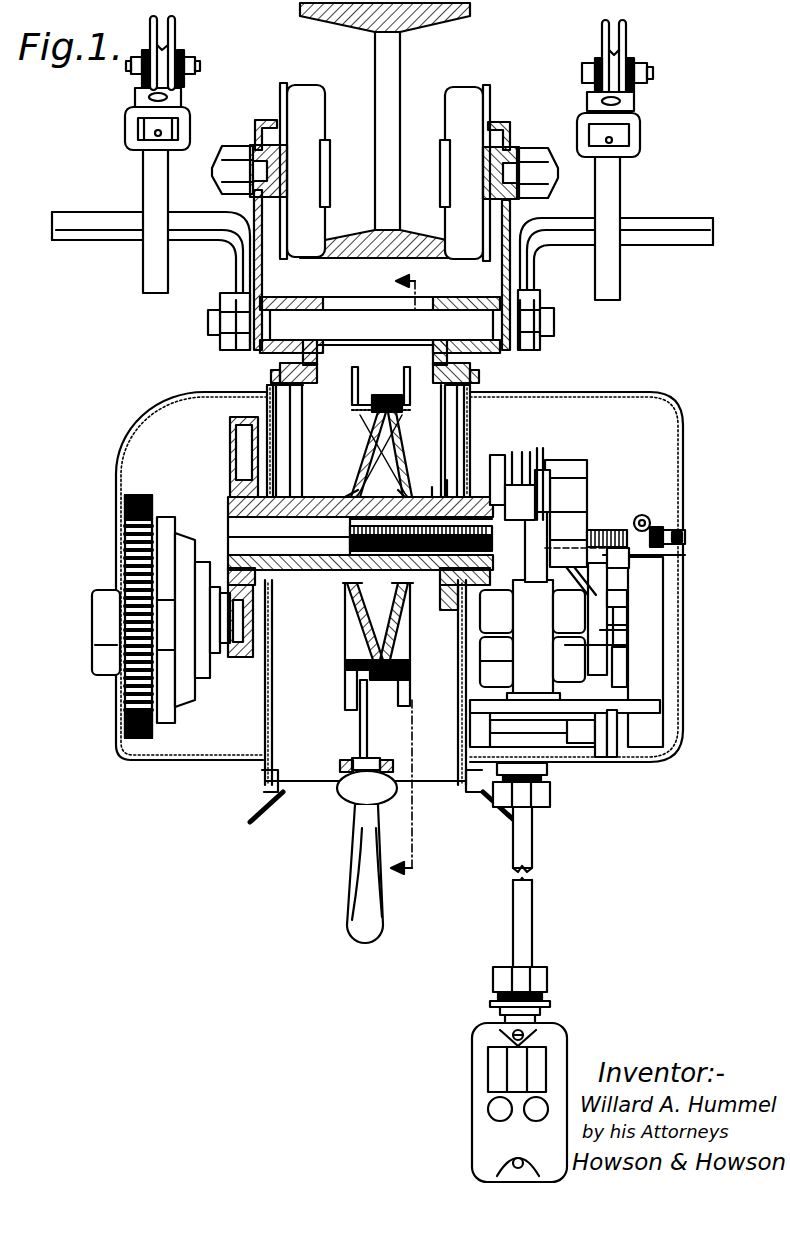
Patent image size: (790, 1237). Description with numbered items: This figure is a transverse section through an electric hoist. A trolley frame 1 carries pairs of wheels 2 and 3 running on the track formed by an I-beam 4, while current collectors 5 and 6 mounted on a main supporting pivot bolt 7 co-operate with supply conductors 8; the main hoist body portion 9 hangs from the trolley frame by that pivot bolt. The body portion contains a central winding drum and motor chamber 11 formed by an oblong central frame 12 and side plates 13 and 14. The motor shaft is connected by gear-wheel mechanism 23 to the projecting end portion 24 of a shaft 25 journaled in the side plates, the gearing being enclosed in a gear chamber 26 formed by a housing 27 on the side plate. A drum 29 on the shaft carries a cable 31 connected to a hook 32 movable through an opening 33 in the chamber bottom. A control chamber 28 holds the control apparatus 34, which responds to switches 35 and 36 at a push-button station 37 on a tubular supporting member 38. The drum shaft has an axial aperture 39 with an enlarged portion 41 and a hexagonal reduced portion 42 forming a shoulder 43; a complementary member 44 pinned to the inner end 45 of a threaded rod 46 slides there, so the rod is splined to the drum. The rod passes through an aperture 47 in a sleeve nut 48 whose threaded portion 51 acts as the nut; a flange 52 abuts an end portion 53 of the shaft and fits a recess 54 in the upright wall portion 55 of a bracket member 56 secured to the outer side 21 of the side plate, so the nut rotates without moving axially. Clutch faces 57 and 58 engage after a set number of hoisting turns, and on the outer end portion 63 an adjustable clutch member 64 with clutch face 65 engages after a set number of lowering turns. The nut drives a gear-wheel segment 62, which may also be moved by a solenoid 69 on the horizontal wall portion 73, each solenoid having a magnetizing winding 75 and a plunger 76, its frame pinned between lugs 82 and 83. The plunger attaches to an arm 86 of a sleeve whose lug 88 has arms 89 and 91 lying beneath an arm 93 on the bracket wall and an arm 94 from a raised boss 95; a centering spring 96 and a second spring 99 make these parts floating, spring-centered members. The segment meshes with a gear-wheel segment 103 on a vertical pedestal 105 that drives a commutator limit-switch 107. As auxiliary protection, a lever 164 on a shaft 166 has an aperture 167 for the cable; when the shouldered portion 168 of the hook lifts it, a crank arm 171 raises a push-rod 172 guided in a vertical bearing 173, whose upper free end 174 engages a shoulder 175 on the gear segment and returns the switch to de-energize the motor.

The trolley frame 1 is at (378, 291).
The wheels 2 is at (312, 128).
The wheels 3 is at (452, 128).
The I-beam 4 is at (396, 72).
The current collector 5 is at (163, 49).
The current collector 6 is at (623, 61).
The main supporting pivot bolt 7 is at (325, 334).
The supply conductors 8 is at (173, 34).
The main hoist body portion 9 is at (373, 418).
The central winding drum and motor chamber 11 is at (373, 376).
The central frame 12 is at (292, 434).
The side plate 13 is at (276, 451).
The side plate 14 is at (466, 408).
The outer side 21 is at (466, 425).
The gear-wheel mechanism 23 is at (230, 501).
The projecting end portion 24 is at (228, 516).
The shaft 25 is at (323, 582).
The gear chamber 26 is at (143, 563).
The housing 27 is at (116, 471).
The control chamber 28 is at (567, 469).
The drum 29 is at (400, 423).
The cable 31 is at (368, 728).
The hook 32 is at (365, 913).
The opening 33 is at (337, 782).
The control apparatus 34 is at (580, 510).
The switch 35 is at (488, 1113).
The switch 36 is at (526, 1117).
The push-button station 37 is at (478, 1063).
The tubular supporting member 38 is at (516, 936).
The axial aperture 39 is at (333, 497).
The enlarged portion 41 is at (430, 481).
The reduced portion 42 is at (289, 539).
The shoulder 43 is at (362, 488).
The complementary member 44 is at (359, 592).
The inner end 45 is at (360, 553).
The threaded rod 46 is at (622, 530).
The aperture 47 is at (447, 480).
The sleeve nut 48 is at (391, 621).
The threaded portion 51 is at (393, 592).
The flange 52 is at (496, 611).
The end portion 53 is at (456, 606).
The recess 54 is at (497, 480).
The upright wall portion 55 is at (496, 662).
The bracket member 56 is at (499, 704).
The clutch face 57 is at (345, 533).
The clutch face 58 is at (393, 486).
The gear-wheel segment 62 is at (598, 577).
The outer end portion 63 is at (690, 550).
The clutch member 64 is at (666, 527).
The clutch face 65 is at (685, 533).
The solenoid 69 is at (533, 606).
The horizontal wall portion 73 is at (615, 695).
The magnetizing winding 75 is at (569, 611).
The plunger 76 is at (627, 600).
The apertured lug 82 is at (590, 743).
The apertured lug 83 is at (485, 736).
The arm 86 is at (575, 552).
The lug 88 is at (607, 523).
The arm 89 is at (514, 470).
The arm 91 is at (545, 470).
The lug or arm 93 is at (531, 465).
The arm 94 is at (550, 475).
The raised boss 95 is at (580, 484).
The centering spring 96 is at (522, 465).
The spring 99 is at (538, 470).
The gear-wheel segment 103 is at (625, 640).
The vertical pedestal 105 is at (628, 648).
The commutator limit-switch 107 is at (650, 652).
The lever 164 is at (546, 745).
The shaft 166 is at (350, 764).
The aperture 167 is at (380, 762).
The shouldered portion 168 is at (362, 795).
The crank arm 171 is at (610, 727).
The push-rod 172 is at (612, 658).
The vertical bearing 173 is at (570, 659).
The upper free end 174 is at (627, 626).
The shoulder 175 is at (630, 558).